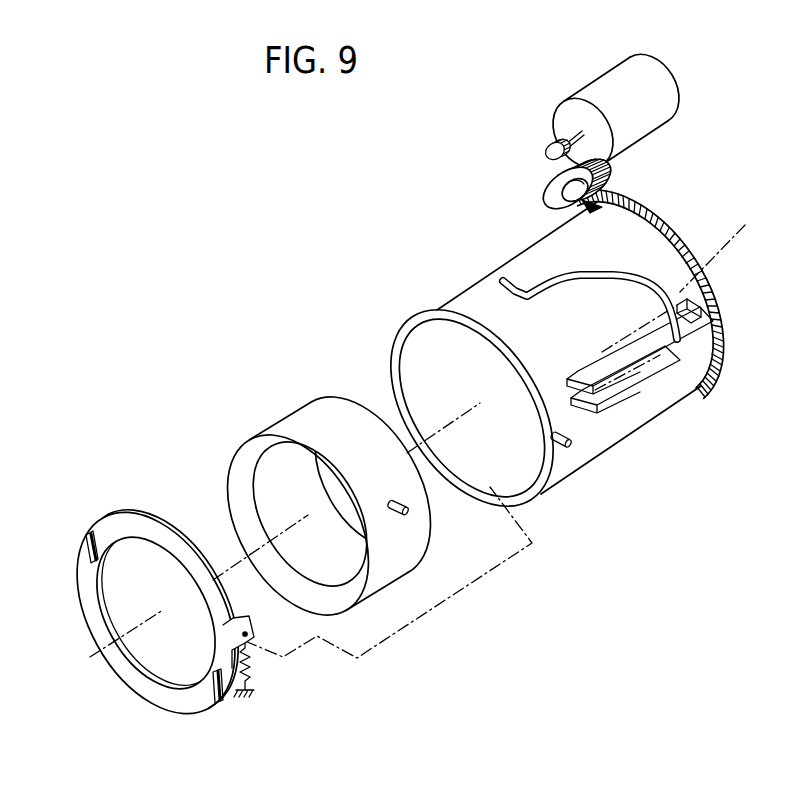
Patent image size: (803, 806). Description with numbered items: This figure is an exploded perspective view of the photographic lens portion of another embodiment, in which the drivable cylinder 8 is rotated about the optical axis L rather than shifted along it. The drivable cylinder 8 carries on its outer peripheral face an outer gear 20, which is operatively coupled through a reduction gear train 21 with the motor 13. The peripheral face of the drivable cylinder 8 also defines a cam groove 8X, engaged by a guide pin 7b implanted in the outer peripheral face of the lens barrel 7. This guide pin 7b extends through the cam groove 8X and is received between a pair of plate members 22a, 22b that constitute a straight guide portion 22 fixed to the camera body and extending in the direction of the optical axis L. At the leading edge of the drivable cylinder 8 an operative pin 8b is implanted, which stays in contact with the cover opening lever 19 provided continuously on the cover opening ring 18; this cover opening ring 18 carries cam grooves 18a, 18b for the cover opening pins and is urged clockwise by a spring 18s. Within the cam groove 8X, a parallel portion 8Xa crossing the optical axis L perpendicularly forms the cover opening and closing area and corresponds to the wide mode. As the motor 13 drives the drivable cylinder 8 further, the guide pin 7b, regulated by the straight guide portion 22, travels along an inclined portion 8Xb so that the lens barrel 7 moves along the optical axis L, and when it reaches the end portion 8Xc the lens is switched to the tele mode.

The lens barrel 7 is at (298, 405).
The guide pin 7b is at (411, 516).
The drivable cylinder 8 is at (437, 304).
The operative pin 8b is at (567, 455).
The cam groove 8X is at (638, 270).
The parallel portion 8Xa is at (700, 310).
The inclined portion 8Xb is at (578, 280).
The end portion 8Xc is at (508, 277).
The motor 13 is at (650, 78).
The cover opening ring 18 is at (143, 517).
The cam groove 18a is at (88, 535).
The cam groove 18b is at (223, 702).
The spring 18s is at (255, 670).
The cover opening lever 19 is at (255, 627).
The outer gear 20 is at (682, 233).
The reduction gear train 21 is at (553, 172).
The straight guide portion 22 is at (644, 416).
The plate member 22a is at (620, 383).
The plate member 22b is at (600, 412).
The optical axis L is at (745, 222).